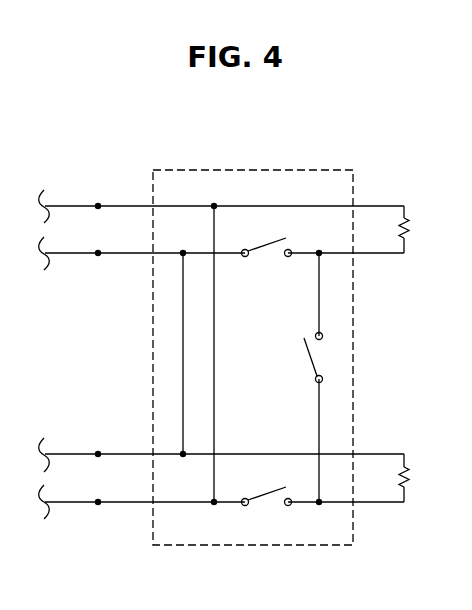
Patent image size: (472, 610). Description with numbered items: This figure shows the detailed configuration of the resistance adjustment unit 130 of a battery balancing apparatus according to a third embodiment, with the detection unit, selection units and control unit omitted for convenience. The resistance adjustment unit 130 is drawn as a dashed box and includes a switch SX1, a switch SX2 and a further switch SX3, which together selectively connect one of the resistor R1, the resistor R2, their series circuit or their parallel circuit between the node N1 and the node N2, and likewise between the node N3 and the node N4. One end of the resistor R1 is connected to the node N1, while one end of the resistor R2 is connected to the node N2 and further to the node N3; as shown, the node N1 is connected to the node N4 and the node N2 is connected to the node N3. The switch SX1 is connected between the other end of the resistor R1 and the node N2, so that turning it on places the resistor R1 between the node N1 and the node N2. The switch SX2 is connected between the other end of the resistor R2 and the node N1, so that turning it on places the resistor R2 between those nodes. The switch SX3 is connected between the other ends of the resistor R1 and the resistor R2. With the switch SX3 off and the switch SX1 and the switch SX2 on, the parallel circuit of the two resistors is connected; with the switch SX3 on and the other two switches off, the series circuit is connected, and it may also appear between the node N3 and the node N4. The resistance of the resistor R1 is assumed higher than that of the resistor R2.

The resistance adjustment unit 130 is at (283, 169).
The node N1 is at (99, 451).
The node N2 is at (99, 499).
The node N3 is at (99, 203).
The node N4 is at (99, 250).
The switch SX1 is at (267, 508).
The switch SX2 is at (267, 259).
The switch SX3 is at (295, 358).
The resistor R1 is at (417, 478).
The resistor R2 is at (417, 229).